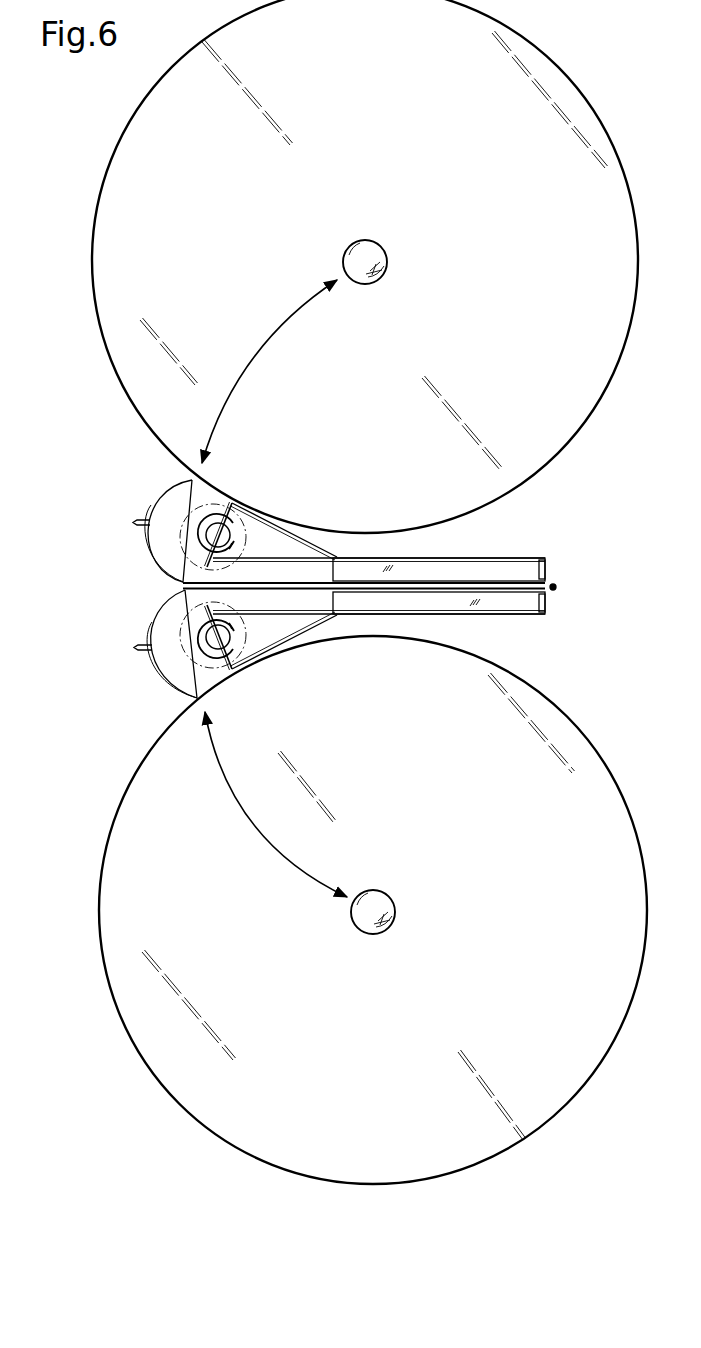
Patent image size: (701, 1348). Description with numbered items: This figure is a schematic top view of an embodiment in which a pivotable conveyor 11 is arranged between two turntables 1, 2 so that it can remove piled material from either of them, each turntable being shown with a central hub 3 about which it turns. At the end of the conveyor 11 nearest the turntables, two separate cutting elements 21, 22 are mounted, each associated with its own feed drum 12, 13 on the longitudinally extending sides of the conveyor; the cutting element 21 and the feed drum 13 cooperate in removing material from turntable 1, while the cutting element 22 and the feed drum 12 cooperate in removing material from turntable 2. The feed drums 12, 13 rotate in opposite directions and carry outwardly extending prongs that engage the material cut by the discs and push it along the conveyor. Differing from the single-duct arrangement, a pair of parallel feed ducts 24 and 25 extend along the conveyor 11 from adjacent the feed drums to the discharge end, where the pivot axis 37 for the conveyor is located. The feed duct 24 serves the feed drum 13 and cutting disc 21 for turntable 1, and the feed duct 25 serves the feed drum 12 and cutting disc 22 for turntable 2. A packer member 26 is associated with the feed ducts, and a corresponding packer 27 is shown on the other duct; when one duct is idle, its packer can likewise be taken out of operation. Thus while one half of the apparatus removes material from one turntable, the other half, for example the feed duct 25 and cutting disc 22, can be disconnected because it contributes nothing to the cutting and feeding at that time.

The turntable 1 is at (458, 136).
The turntable 2 is at (531, 883).
The roll shaft 3 is at (383, 250).
The conveyor 11 is at (400, 616).
The feed drum 12 is at (228, 642).
The feed drum 13 is at (232, 528).
The cutting element 21 is at (162, 503).
The cutting element 22 is at (160, 623).
The feed duct 24 is at (472, 558).
The feed duct 25 is at (498, 616).
The packer member 26 is at (517, 570).
The lower stop 27 is at (542, 605).
The pivot axis 37 is at (557, 586).